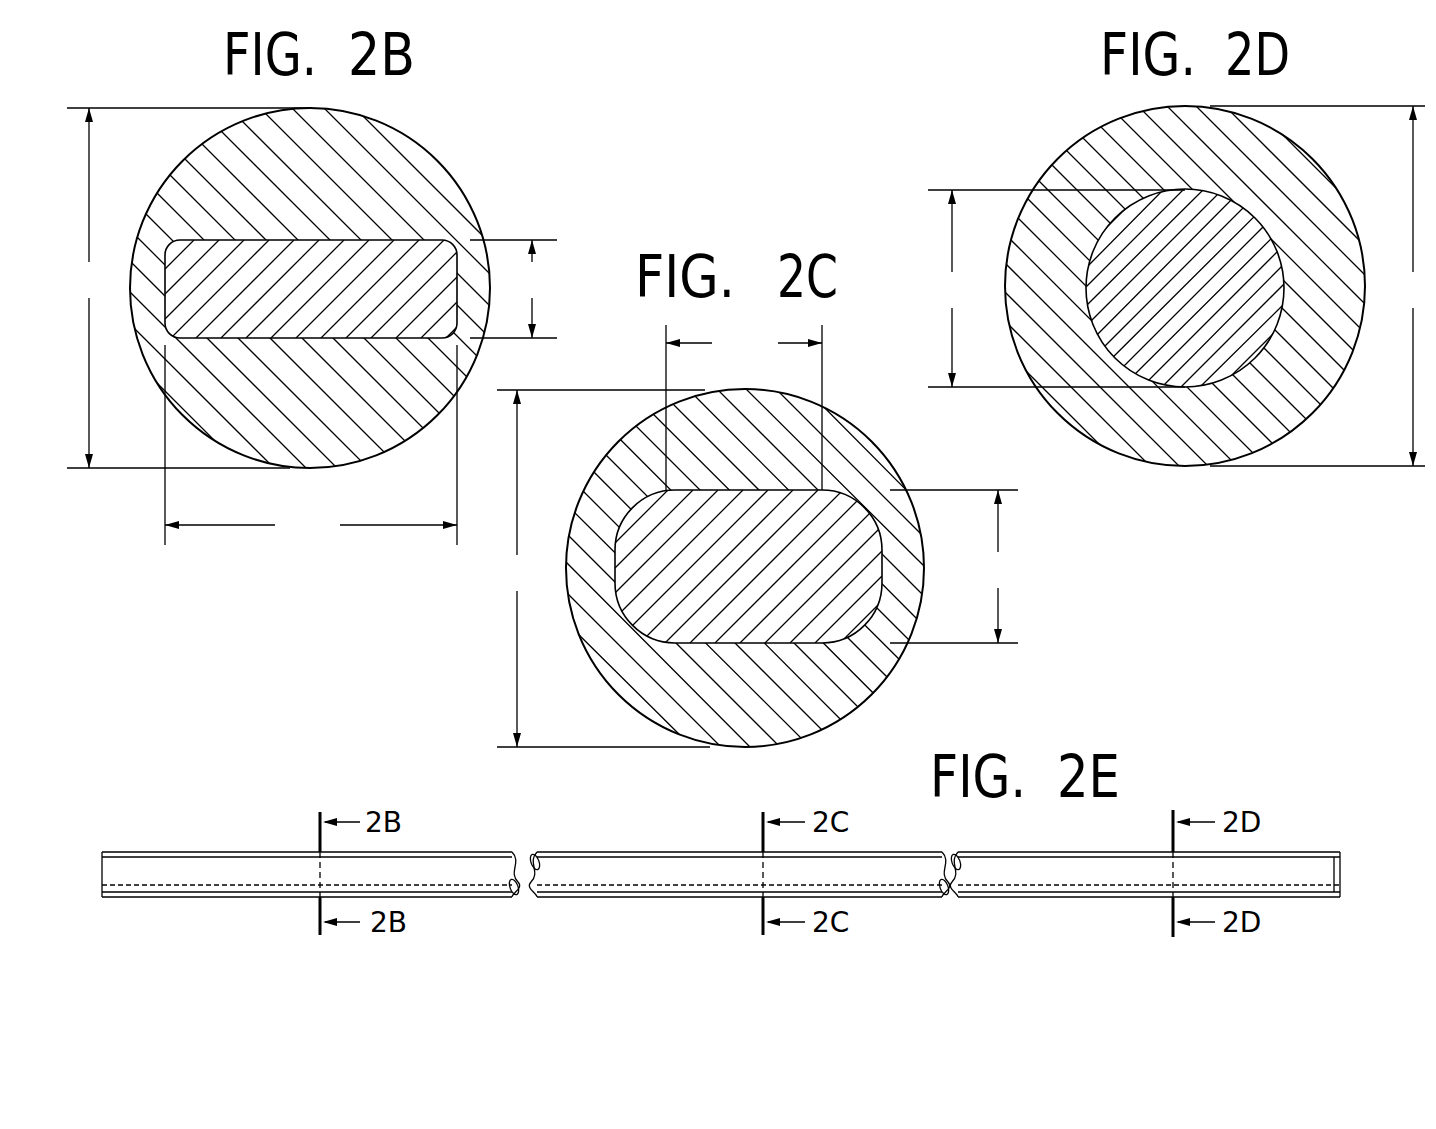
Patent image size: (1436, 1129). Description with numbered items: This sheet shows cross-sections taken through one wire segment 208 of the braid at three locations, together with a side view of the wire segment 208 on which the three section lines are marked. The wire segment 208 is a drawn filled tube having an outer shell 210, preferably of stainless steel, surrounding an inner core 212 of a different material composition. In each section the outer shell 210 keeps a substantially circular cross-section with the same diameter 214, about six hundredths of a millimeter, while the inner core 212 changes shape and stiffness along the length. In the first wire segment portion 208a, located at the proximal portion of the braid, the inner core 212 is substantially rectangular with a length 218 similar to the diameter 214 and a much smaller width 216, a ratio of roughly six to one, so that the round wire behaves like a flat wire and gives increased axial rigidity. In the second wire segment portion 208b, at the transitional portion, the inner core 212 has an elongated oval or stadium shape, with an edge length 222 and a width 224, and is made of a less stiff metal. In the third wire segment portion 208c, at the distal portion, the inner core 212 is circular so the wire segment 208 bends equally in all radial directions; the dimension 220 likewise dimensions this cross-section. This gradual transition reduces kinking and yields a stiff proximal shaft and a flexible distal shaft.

In FIG. 2E, the wire segment 208 is at (742, 857).
In FIG. 2B, the first wire segment portion 208a is at (438, 156).
In FIG. 2E, the first wire segment portion 208a is at (217, 842).
In FIG. 2C, the second wire segment portion 208b is at (890, 694).
In FIG. 2E, the second wire segment portion 208b is at (676, 842).
In FIG. 2D, the third wire segment portion 208c is at (1067, 144).
In FIG. 2E, the third wire segment portion 208c is at (1112, 900).
In FIG. 2B, the outer shell 210 is at (450, 205).
In FIG. 2C, the outer shell 210 is at (870, 470).
In FIG. 2D, the outer shell 210 is at (1160, 440).
In FIG. 2B, the inner core 212 is at (288, 340).
In FIG. 2C, the inner core 212 is at (740, 636).
In FIG. 2D, the inner core 212 is at (1222, 350).
In FIG. 2B, the diameter 214 is at (188, 288).
In FIG. 2C, the diameter 214 is at (601, 568).
In FIG. 2D, the diameter 214 is at (1323, 286).
In FIG. 2B, the width 216 is at (514, 289).
In FIG. 2B, the length 218 is at (311, 445).
In FIG. 2C, the core height in second segment 220 is at (956, 566).
In FIG. 2C, the length 222 is at (744, 407).
In FIG. 2D, the width 224 is at (1056, 288).